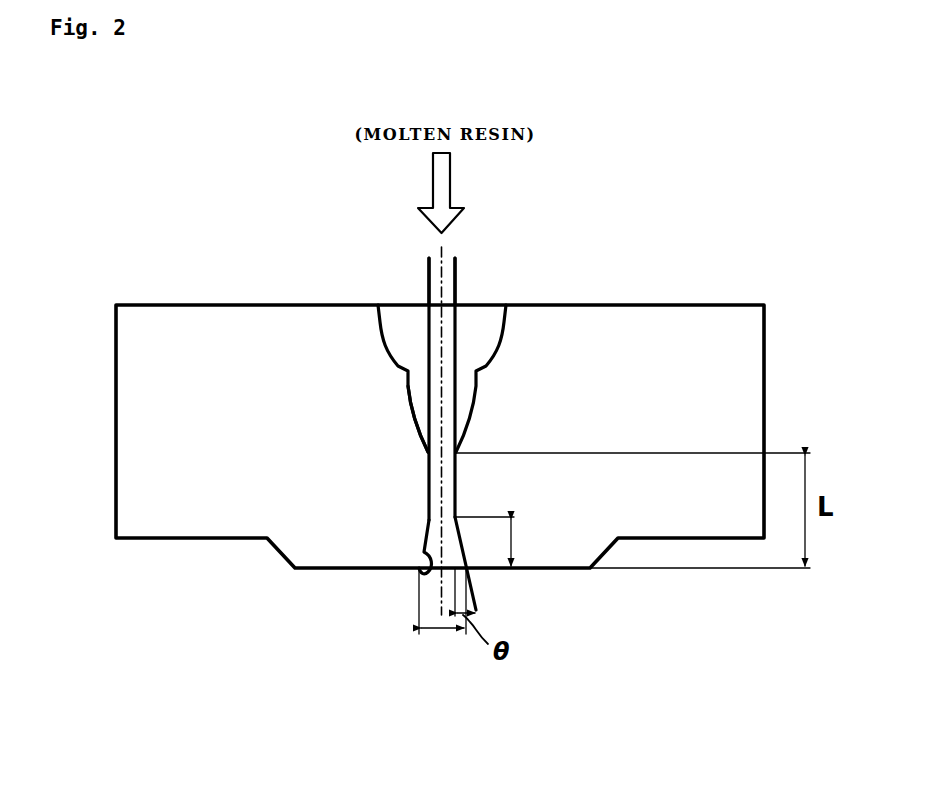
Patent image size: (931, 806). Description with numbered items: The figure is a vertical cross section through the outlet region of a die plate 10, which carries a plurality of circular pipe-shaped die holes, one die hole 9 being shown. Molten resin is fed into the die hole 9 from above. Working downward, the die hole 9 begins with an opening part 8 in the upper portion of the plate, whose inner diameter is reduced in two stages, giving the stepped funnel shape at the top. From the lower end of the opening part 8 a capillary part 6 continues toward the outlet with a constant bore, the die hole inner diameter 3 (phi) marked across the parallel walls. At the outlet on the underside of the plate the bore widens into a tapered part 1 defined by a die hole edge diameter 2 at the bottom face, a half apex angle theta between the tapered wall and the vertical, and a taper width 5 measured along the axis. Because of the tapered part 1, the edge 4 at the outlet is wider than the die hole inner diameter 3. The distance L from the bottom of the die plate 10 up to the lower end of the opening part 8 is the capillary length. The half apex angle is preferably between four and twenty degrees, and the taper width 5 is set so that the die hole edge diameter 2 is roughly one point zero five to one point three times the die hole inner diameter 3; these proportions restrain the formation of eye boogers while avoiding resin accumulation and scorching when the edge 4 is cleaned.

The tapered part 1 is at (426, 571).
The die hole edge diameter 2 is at (437, 632).
The die hole inner diameter 3 is at (407, 272).
The edge 4 is at (419, 572).
The taper width 5 is at (493, 563).
The capillary part 6 is at (429, 482).
The opening part 8 is at (418, 398).
The die hole 9 is at (406, 322).
The die plate 10 is at (616, 298).